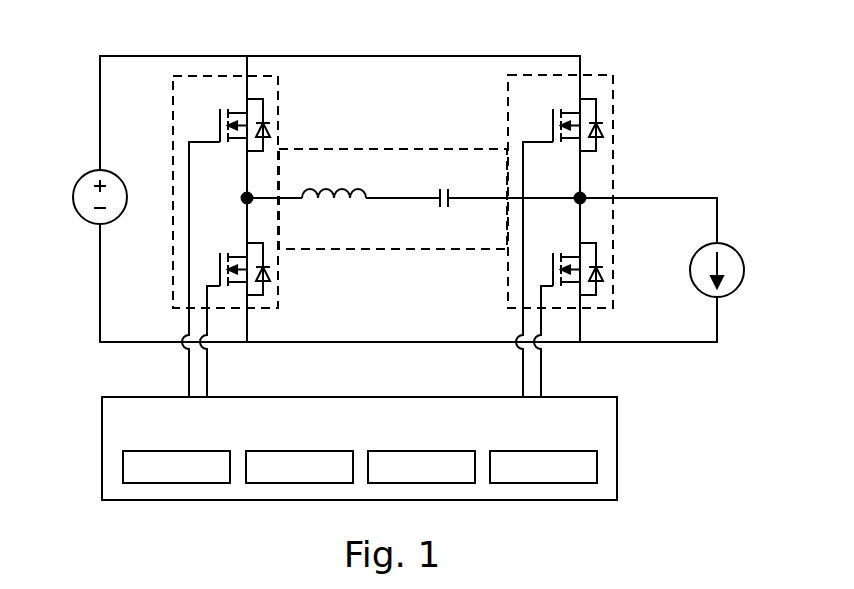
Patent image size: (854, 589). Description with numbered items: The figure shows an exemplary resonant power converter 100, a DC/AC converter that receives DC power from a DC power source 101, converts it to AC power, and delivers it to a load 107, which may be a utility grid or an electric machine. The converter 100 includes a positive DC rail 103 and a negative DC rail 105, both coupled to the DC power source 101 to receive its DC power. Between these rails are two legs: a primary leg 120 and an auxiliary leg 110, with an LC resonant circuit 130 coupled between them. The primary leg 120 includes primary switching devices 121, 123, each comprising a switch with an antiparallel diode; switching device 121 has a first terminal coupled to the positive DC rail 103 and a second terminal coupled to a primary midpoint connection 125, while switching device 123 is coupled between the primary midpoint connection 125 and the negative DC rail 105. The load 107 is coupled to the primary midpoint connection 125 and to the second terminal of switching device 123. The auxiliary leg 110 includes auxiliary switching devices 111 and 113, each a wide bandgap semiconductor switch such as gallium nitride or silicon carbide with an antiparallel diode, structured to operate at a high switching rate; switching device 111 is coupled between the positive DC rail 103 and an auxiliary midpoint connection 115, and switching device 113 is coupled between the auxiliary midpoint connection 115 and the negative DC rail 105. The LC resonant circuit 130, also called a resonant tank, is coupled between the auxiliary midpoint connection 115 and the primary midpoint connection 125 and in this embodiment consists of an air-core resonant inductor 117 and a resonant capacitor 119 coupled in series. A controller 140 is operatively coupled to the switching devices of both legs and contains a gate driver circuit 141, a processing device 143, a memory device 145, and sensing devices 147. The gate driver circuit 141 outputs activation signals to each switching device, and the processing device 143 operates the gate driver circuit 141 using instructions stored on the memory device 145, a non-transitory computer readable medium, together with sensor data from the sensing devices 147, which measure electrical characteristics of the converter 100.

The resonant power converter 100 is at (668, 369).
The DC power source 101 is at (88, 170).
The positive DC rail 103 is at (130, 56).
The negative DC rail 105 is at (115, 343).
The load 107 is at (735, 247).
The auxiliary leg 110 is at (217, 76).
The auxiliary switching device 111 is at (265, 100).
The auxiliary switching device 113 is at (265, 258).
The auxiliary midpoint connection 115 is at (245, 195).
The air-core resonant inductor 117 is at (370, 198).
The resonant capacitor 119 is at (455, 198).
The primary leg 120 is at (590, 75).
The primary switching device 121 is at (598, 99).
The primary switching device 123 is at (600, 262).
The primary midpoint connection 125 is at (583, 196).
The LC resonant circuit 130 is at (422, 149).
The controller 140 is at (101, 437).
The gate driver circuit 141 is at (173, 483).
The processing device 143 is at (293, 483).
The memory device 145 is at (422, 483).
The sensing devices 147 is at (542, 483).